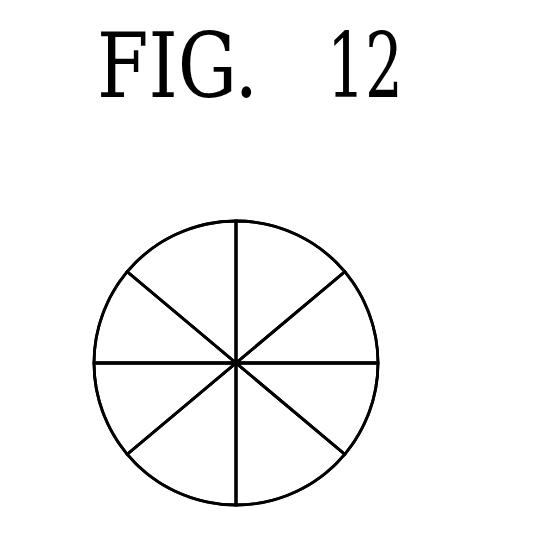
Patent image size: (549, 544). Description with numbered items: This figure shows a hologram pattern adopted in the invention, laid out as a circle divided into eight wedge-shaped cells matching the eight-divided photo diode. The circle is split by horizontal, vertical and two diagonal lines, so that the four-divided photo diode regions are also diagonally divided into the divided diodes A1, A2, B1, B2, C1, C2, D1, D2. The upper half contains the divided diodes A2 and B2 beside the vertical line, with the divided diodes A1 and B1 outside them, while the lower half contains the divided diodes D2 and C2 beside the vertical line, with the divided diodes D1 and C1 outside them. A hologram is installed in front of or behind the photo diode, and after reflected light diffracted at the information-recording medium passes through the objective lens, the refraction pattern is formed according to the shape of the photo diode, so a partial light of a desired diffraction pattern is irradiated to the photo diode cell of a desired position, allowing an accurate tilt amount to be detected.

The divided diode A1 is at (165, 317).
The divided diode A2 is at (181, 292).
The divided diode B1 is at (307, 317).
The divided diode B2 is at (290, 292).
The divided diode C1 is at (307, 408).
The divided diode C2 is at (290, 434).
The divided diode D1 is at (165, 408).
The divided diode D2 is at (181, 434).